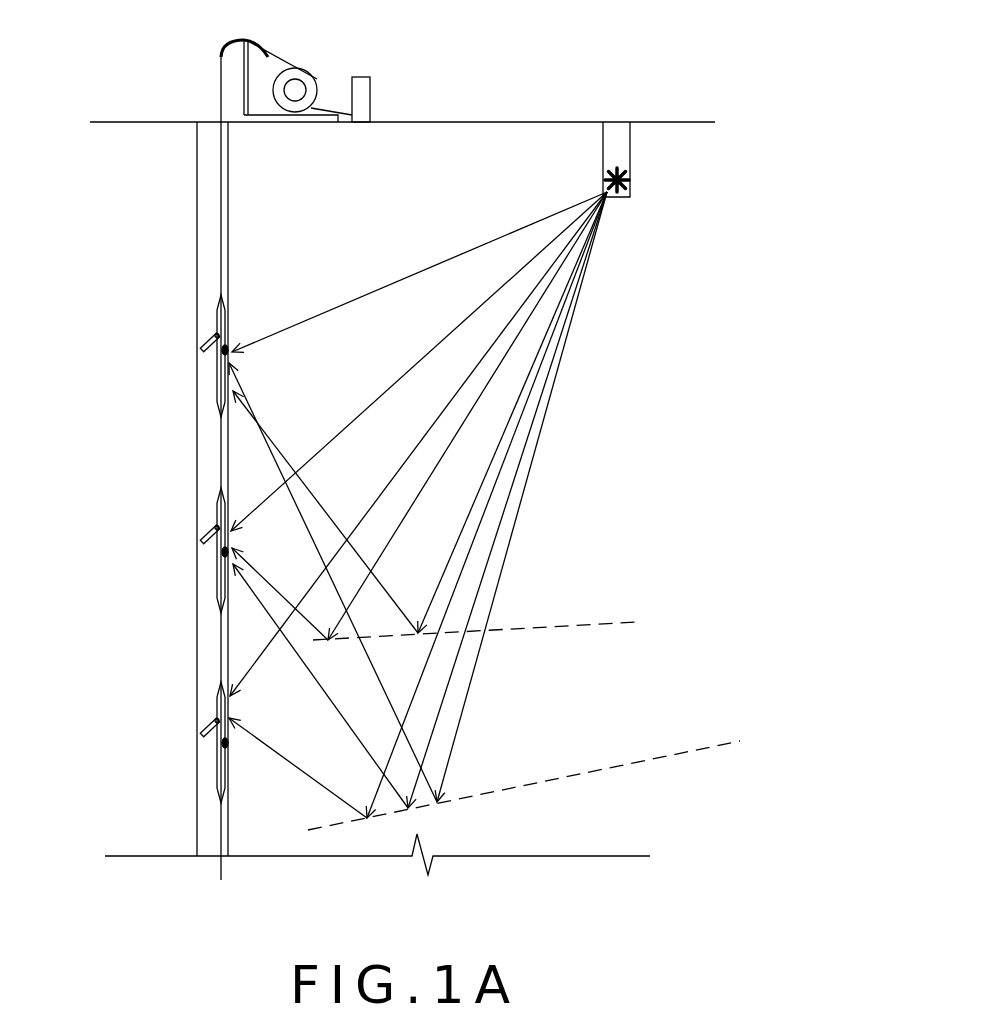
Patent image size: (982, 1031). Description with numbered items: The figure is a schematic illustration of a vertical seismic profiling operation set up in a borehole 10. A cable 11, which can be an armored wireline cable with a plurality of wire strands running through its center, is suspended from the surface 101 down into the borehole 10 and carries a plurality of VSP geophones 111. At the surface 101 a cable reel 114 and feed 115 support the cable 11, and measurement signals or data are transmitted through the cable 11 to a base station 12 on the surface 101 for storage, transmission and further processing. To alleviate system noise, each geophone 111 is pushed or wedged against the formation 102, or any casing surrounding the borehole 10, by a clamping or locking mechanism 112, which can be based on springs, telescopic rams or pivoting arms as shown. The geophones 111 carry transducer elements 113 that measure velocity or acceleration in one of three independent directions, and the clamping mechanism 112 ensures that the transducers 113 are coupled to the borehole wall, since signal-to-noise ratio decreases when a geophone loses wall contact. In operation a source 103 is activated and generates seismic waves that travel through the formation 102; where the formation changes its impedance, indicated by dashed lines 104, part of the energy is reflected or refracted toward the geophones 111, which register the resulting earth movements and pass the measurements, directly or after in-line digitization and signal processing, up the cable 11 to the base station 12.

The borehole 10 is at (160, 254).
The cable 11 is at (220, 88).
The base station 12 is at (370, 107).
The surface 101 is at (465, 121).
The formation 102 is at (176, 483).
The source 103 is at (610, 172).
The dashed lines 104 is at (580, 625).
The VSP geophones 111 is at (217, 398).
The clamping or locking mechanism 112 is at (203, 347).
The transducer elements 113 is at (228, 342).
The cable reel 114 is at (313, 78).
The feed 115 is at (263, 53).